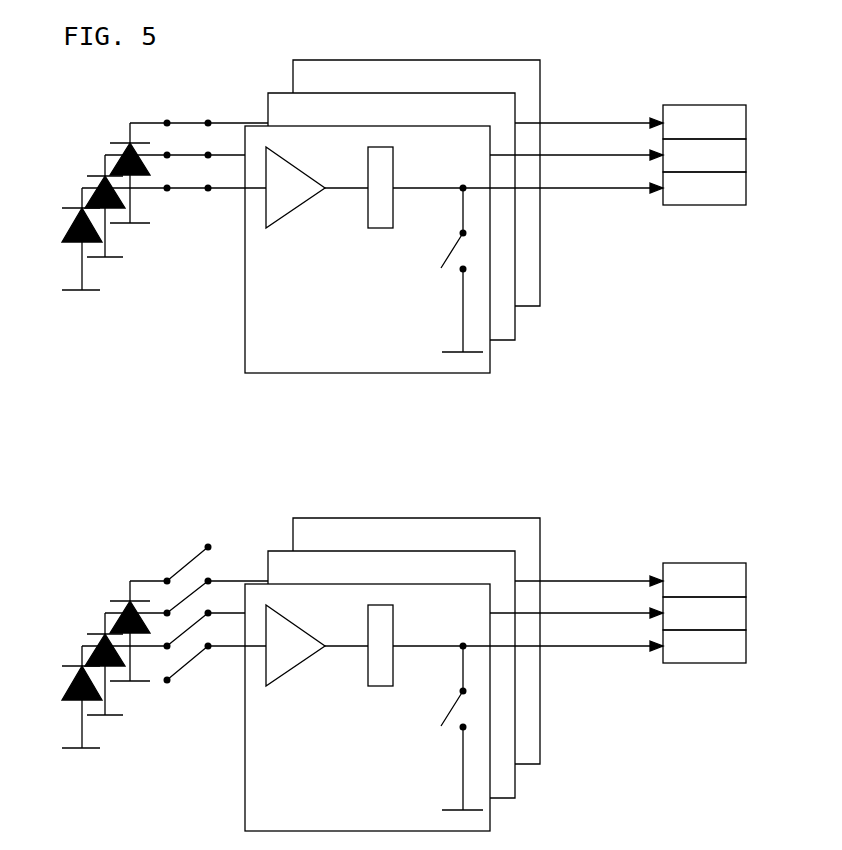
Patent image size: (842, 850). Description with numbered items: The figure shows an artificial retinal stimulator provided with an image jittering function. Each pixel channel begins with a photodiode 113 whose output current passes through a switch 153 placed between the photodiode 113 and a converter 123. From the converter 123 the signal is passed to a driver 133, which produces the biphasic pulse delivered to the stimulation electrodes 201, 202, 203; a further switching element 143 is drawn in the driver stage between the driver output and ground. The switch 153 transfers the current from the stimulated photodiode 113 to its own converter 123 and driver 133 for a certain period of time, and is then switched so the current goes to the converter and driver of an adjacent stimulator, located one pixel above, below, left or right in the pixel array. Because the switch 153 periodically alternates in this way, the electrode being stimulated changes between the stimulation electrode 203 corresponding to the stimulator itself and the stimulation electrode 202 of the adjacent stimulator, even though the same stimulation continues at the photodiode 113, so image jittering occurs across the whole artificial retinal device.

The photodiode 113 is at (62, 235).
The switch 153 is at (192, 195).
The converter 123 is at (285, 218).
The driver 133 is at (378, 230).
The switch 143 is at (438, 270).
The stimulation electrode 201 is at (746, 122).
The stimulation electrode 202 is at (746, 155).
The stimulation electrode 203 is at (746, 188).